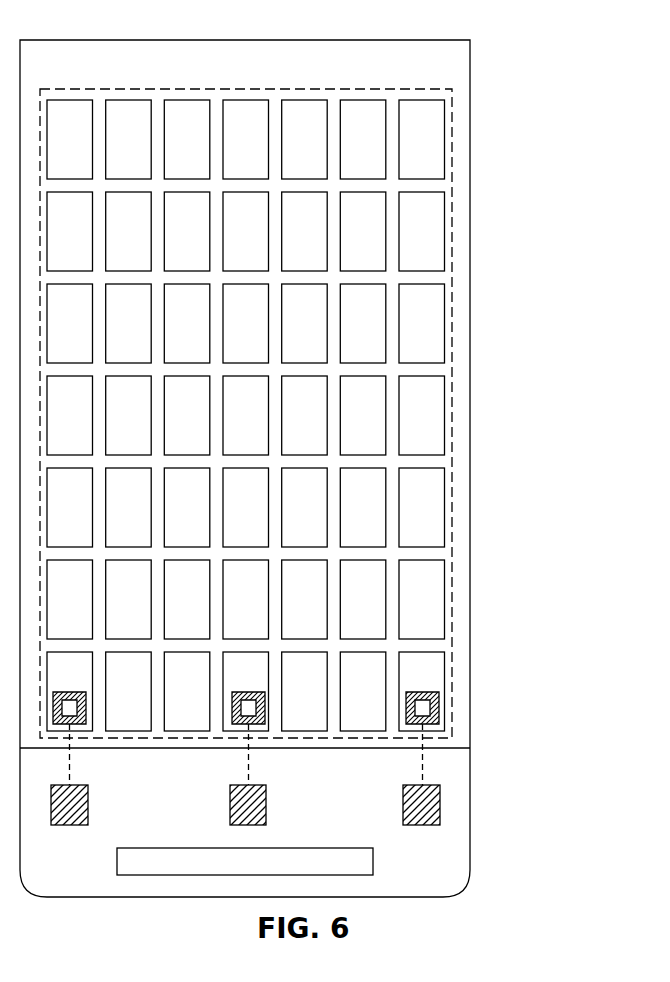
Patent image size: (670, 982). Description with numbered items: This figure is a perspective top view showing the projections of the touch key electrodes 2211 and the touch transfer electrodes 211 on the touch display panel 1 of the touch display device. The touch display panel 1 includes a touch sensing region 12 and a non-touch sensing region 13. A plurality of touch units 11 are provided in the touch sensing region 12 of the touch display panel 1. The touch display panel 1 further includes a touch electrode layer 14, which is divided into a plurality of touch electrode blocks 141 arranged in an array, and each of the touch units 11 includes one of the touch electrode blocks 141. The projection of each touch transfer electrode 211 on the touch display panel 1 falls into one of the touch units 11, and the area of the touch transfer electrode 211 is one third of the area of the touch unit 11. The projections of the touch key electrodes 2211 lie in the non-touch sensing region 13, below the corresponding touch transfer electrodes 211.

The touch display panel 1 is at (470, 78).
The touch sensing region 12 is at (452, 217).
The touch electrode layer 14 is at (442, 336).
The touch electrode block 141 is at (430, 422).
The touch unit 11 is at (423, 672).
The touch transfer electrode 211 is at (435, 698).
The touch key electrode 2211 is at (438, 792).
The non-touch sensing region 13 is at (427, 875).